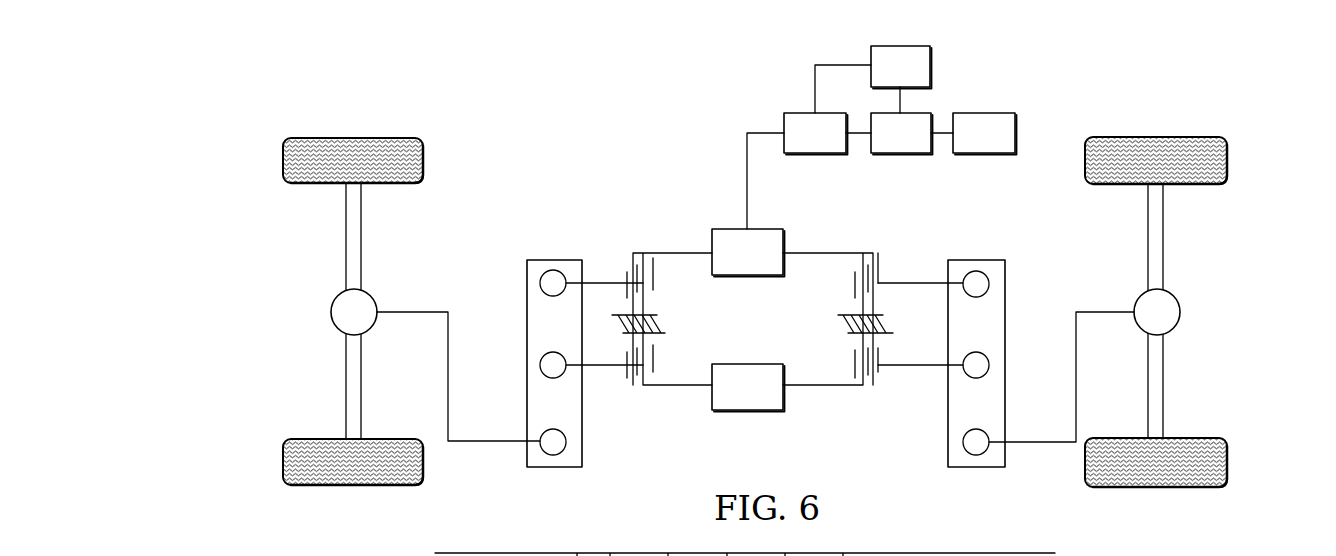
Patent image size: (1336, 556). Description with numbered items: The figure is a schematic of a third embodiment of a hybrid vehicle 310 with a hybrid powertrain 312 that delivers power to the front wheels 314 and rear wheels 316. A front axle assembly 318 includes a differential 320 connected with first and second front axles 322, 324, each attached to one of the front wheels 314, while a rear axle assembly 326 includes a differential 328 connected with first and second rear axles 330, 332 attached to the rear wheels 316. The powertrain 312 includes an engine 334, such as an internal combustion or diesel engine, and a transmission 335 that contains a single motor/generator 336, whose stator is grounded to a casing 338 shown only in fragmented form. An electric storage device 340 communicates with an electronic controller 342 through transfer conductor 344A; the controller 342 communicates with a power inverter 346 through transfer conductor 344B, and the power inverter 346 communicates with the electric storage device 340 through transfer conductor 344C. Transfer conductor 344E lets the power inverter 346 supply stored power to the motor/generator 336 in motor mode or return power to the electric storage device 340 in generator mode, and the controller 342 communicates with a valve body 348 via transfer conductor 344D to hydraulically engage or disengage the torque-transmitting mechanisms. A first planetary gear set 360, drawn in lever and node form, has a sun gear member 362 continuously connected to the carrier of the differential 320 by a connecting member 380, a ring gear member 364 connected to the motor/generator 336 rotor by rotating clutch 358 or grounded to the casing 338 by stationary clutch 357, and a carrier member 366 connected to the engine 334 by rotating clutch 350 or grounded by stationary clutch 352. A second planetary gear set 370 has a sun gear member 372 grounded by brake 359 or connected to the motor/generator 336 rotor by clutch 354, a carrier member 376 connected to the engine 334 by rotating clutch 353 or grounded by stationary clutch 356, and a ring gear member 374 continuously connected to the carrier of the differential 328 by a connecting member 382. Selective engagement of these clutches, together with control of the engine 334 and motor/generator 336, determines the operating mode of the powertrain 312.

The hybrid vehicle 310 is at (437, 92).
The hybrid powertrain 312 is at (505, 172).
The front wheels 314 is at (352, 138).
The rear wheels 316 is at (1155, 137).
The front axle assembly 318 is at (400, 240).
The differential 320 is at (354, 312).
The first front axle 322 is at (346, 385).
The second front axle 324 is at (346, 238).
The rear axle assembly 326 is at (1132, 275).
The differential 328 is at (1157, 312).
The first rear axle 330 is at (1165, 385).
The second rear axle 332 is at (1165, 240).
The engine 334 is at (748, 388).
The transmission 335 is at (617, 187).
The motor/generator 336 is at (748, 253).
The casing 338 is at (668, 322).
The electric storage device 340 is at (901, 67).
The electronic controller 342 is at (902, 134).
The transfer conductor 344A is at (900, 100).
The transfer conductor 344B is at (858, 133).
The transfer conductor 344C is at (843, 65).
The transfer conductor 344D is at (942, 133).
The transfer conductor 344E is at (747, 183).
The power inverter 346 is at (816, 134).
The valve body 348 is at (985, 134).
The torque-transmitting mechanism 350 is at (628, 392).
The torque-transmitting mechanism 352 is at (664, 365).
The torque-transmitting mechanism 353 is at (878, 393).
The torque-transmitting mechanism 354 is at (890, 256).
The torque-transmitting mechanism 356 is at (840, 358).
The torque-transmitting mechanism 357 is at (652, 300).
The torque-transmitting mechanism 358 is at (612, 258).
The torque-transmitting mechanism 359 is at (840, 300).
The first planetary gear set 360 is at (527, 455).
The sun gear member 362 is at (553, 455).
The ring gear member 364 is at (543, 275).
The carrier member 366 is at (544, 373).
The second planetary gear set 370 is at (948, 430).
The sun gear member 372 is at (978, 271).
The ring gear member 374 is at (980, 430).
The carrier member 376 is at (981, 352).
The connecting member 380 is at (413, 312).
The connecting member 382 is at (1055, 442).